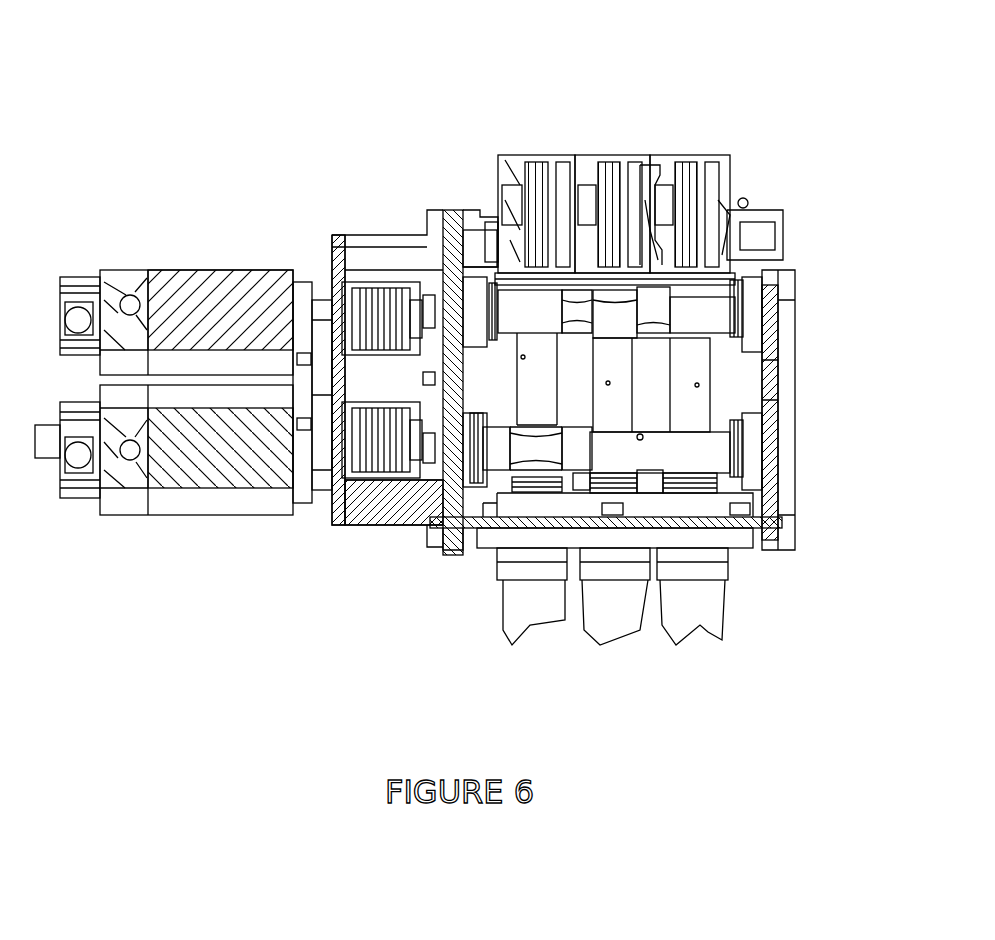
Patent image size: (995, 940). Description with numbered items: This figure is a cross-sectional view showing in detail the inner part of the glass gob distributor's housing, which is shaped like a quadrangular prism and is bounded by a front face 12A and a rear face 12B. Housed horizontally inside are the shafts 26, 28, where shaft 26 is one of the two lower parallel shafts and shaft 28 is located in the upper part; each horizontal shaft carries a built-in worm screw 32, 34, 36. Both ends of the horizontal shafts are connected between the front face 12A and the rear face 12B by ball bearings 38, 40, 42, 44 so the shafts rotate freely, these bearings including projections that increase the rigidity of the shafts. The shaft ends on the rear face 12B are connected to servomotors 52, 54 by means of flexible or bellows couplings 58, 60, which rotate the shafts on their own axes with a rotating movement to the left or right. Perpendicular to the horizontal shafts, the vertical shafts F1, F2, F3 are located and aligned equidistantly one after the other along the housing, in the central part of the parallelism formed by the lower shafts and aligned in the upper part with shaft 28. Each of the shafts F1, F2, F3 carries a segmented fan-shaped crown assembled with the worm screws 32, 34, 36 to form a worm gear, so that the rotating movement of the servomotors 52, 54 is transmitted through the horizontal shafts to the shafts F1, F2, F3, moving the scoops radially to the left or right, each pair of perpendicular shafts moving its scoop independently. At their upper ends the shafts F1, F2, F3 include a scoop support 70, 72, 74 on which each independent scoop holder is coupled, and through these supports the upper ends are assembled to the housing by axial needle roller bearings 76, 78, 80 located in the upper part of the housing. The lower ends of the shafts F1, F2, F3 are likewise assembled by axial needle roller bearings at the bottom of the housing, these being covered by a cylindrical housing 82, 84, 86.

The front face 12A is at (772, 385).
The rear face 12B is at (323, 268).
The shaft 26 is at (643, 440).
The shaft 28 is at (705, 300).
The worm screw 32 is at (521, 438).
The worm screw 34 is at (608, 310).
The worm screw 36 is at (646, 475).
The ball bearing 38 is at (752, 470).
The ball bearing 40 is at (484, 440).
The ball bearing 42 is at (750, 311).
The ball bearing 44 is at (525, 360).
The servomotor 52 is at (193, 463).
The servomotor 54 is at (205, 300).
The flexible or bellows coupling 58 is at (370, 450).
The flexible or bellows coupling 60 is at (360, 290).
The scoop support 70 is at (702, 155).
The scoop support 72 is at (610, 170).
The scoop support 74 is at (528, 170).
The axial needle roller bearing 76 is at (730, 193).
The axial needle roller bearing 78 is at (650, 190).
The axial needle roller bearing 80 is at (500, 202).
The cylindrical housing 82 is at (678, 605).
The cylindrical housing 84 is at (608, 605).
The cylindrical housing 86 is at (525, 603).
The shaft F1 is at (697, 385).
The shaft F2 is at (608, 383).
The shaft F3 is at (521, 355).